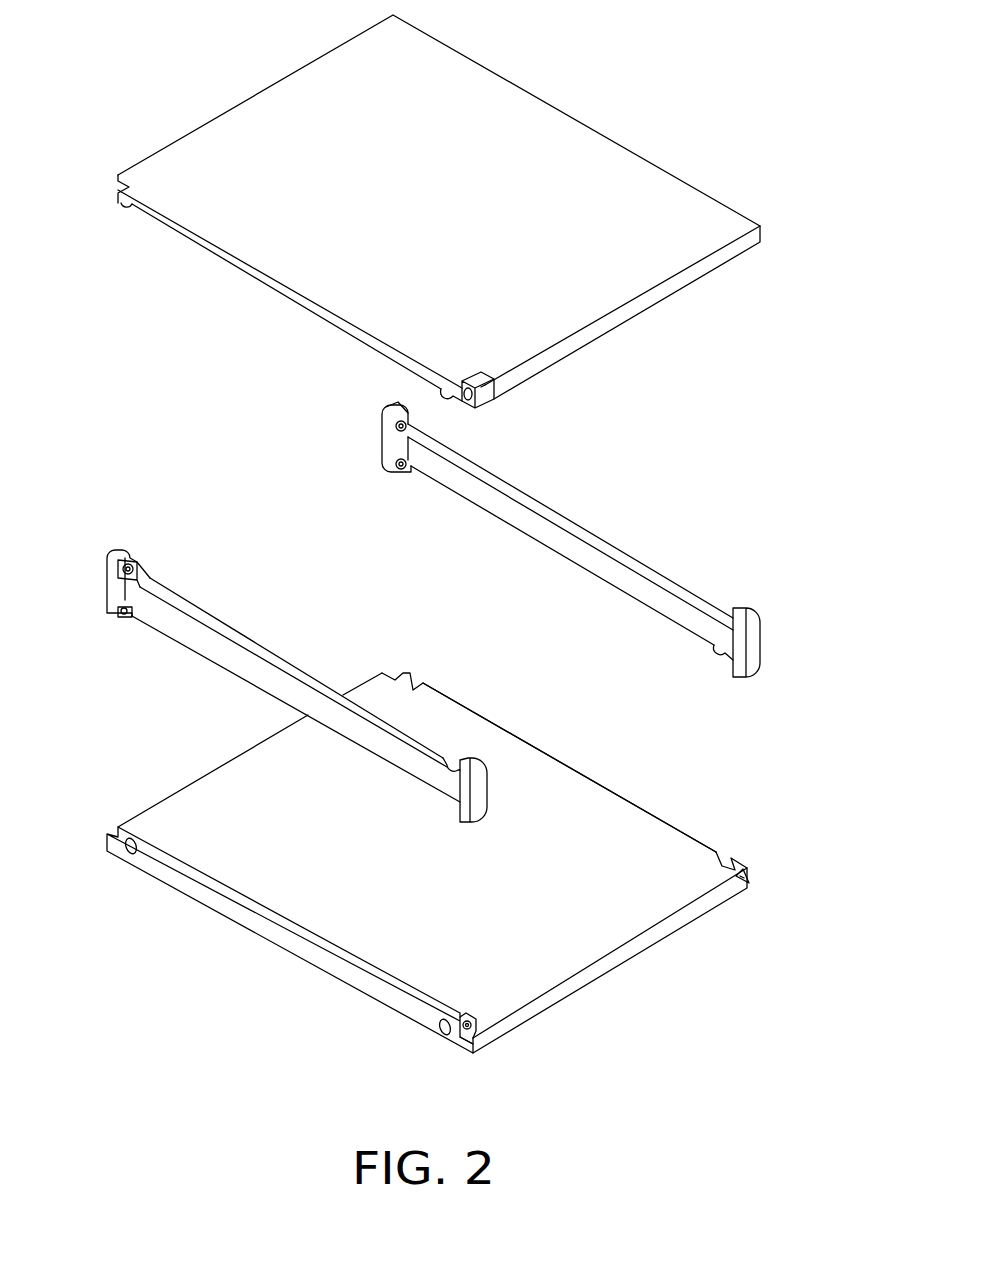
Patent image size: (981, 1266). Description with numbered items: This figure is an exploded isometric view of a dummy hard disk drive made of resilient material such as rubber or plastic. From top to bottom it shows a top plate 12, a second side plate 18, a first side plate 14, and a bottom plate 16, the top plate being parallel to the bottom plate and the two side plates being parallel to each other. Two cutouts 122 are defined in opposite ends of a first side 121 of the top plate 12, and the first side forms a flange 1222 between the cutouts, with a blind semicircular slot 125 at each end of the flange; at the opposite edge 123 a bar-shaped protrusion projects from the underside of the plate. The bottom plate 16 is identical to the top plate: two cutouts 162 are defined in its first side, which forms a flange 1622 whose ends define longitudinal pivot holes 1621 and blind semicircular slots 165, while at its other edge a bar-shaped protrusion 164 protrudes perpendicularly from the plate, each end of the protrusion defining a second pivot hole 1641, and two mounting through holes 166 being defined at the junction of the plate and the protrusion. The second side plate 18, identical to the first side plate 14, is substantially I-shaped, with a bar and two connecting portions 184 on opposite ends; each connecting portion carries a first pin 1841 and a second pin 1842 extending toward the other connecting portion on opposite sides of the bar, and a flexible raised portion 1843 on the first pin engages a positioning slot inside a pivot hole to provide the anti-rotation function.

The top plate 12 is at (404, 229).
The edge 123 is at (660, 178).
The blind semicircular slot 125 is at (126, 215).
The first side 121 is at (262, 258).
The flange 1222 is at (310, 313).
The cutout 122 is at (470, 400).
The second side plate 18 is at (530, 530).
The connecting portion 184 is at (355, 446).
The first pin 1841 is at (395, 426).
The second pin 1842 is at (397, 470).
The flexible raised portion 1843 is at (390, 410).
The first side plate 14 is at (232, 655).
The bottom plate 16 is at (443, 888).
The flange 1622 is at (630, 797).
The blind semicircular slot 165 is at (722, 856).
The longitudinal pivot hole 1621 is at (746, 868).
The cutout 162 is at (755, 882).
The bar-shaped protrusion 164 is at (291, 965).
The mounting through hole 166 is at (126, 853).
The second pivot hole 1641 is at (476, 1042).